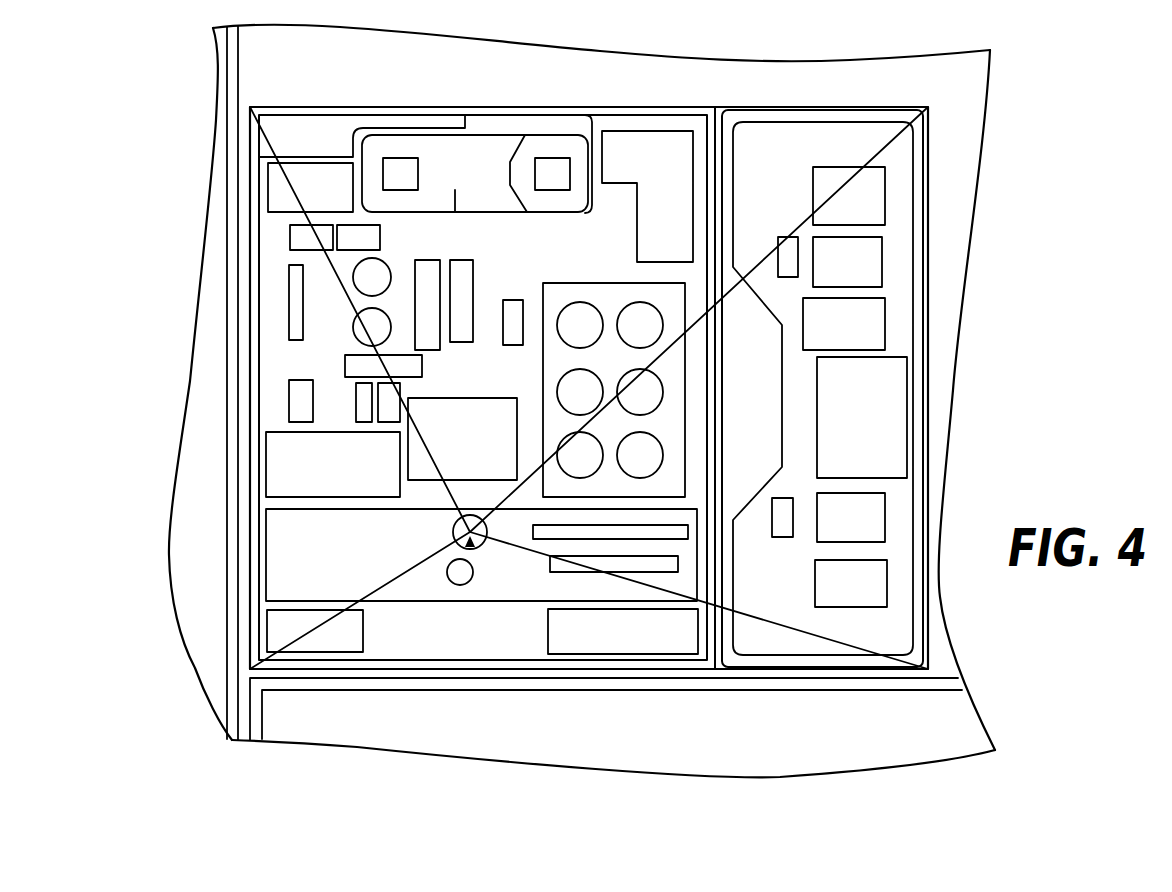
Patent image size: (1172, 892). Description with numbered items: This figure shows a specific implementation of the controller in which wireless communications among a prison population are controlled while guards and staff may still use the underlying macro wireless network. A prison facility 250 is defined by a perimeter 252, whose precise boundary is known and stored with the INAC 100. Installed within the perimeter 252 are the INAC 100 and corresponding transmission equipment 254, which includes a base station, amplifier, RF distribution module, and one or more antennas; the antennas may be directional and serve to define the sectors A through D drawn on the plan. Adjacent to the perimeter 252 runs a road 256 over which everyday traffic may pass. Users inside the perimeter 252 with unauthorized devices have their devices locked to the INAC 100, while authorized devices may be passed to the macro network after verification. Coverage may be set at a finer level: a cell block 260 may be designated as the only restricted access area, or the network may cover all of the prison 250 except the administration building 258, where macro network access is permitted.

The INAC 100 is at (468, 577).
The prison facility 250 is at (499, 331).
The perimeter 252 is at (875, 342).
The transmission equipment 254 is at (470, 533).
The road 256 is at (233, 73).
The administration building 258 is at (673, 147).
The cell block 260 is at (887, 415).